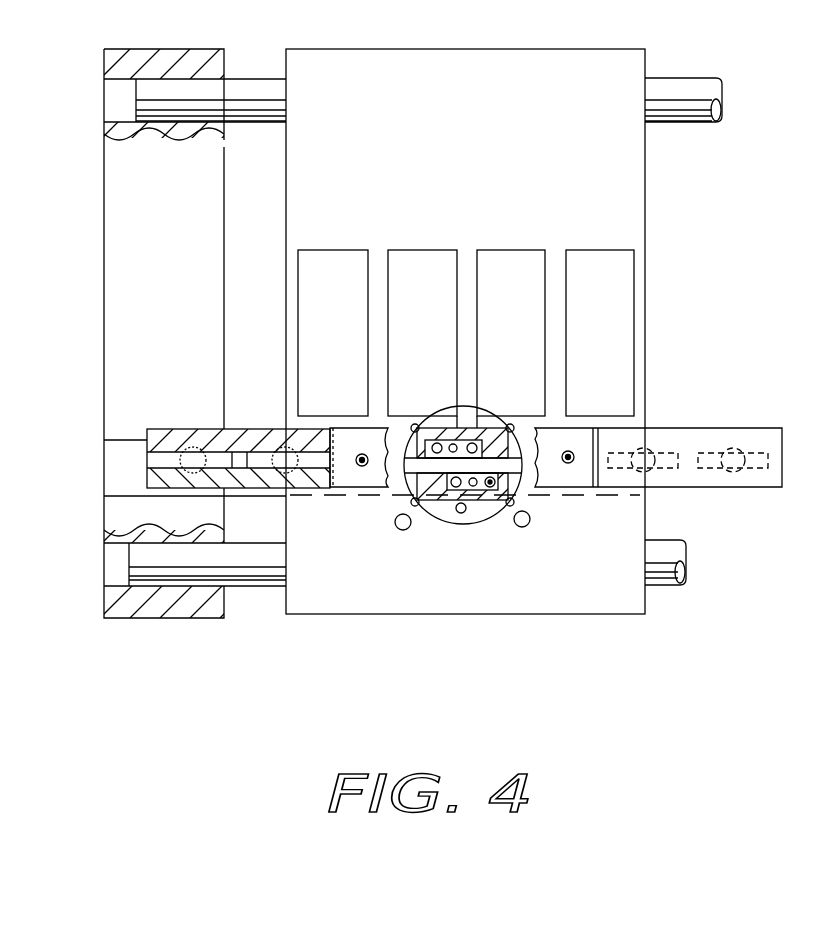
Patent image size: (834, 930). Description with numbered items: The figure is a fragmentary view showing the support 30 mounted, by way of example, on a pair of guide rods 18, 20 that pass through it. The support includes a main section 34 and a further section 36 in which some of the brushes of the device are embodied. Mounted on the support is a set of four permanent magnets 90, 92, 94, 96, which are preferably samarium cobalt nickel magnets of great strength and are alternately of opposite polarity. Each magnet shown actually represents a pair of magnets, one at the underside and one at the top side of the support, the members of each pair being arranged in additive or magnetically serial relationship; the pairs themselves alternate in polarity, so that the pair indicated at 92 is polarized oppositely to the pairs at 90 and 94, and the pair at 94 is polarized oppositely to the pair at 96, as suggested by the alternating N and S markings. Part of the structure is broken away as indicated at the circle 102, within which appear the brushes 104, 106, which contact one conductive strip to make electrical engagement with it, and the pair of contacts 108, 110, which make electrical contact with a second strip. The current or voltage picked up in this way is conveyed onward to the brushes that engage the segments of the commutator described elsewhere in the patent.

The guide rod 18 is at (682, 90).
The guide rod 20 is at (660, 553).
The support 30 is at (662, 316).
The main section 34 is at (286, 235).
The section 36 is at (163, 428).
The permanent magnet 90 is at (338, 260).
The permanent magnet 92 is at (424, 260).
The permanent magnet 94 is at (514, 260).
The permanent magnet 96 is at (594, 260).
The circle 102 is at (403, 478).
The brush 104 is at (440, 445).
The brush 106 is at (478, 444).
The contact 108 is at (456, 487).
The contact 110 is at (490, 487).